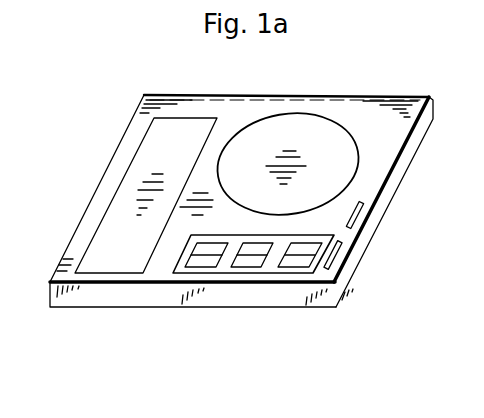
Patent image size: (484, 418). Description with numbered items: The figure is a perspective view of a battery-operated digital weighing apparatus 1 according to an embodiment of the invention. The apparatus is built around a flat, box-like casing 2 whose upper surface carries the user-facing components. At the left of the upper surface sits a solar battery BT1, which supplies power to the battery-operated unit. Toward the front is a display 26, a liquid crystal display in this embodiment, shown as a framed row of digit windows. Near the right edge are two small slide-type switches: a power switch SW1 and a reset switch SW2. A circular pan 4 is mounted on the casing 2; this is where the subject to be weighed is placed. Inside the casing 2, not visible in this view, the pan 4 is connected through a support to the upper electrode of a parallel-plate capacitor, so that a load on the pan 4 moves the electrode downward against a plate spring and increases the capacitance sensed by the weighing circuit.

The weighing apparatus 1 is at (137, 308).
The casing 2 is at (78, 300).
The pan 4 is at (341, 170).
The display 26 is at (225, 263).
The solar battery BT1 is at (133, 190).
The power switch SW1 is at (343, 257).
The reset switch SW2 is at (365, 214).